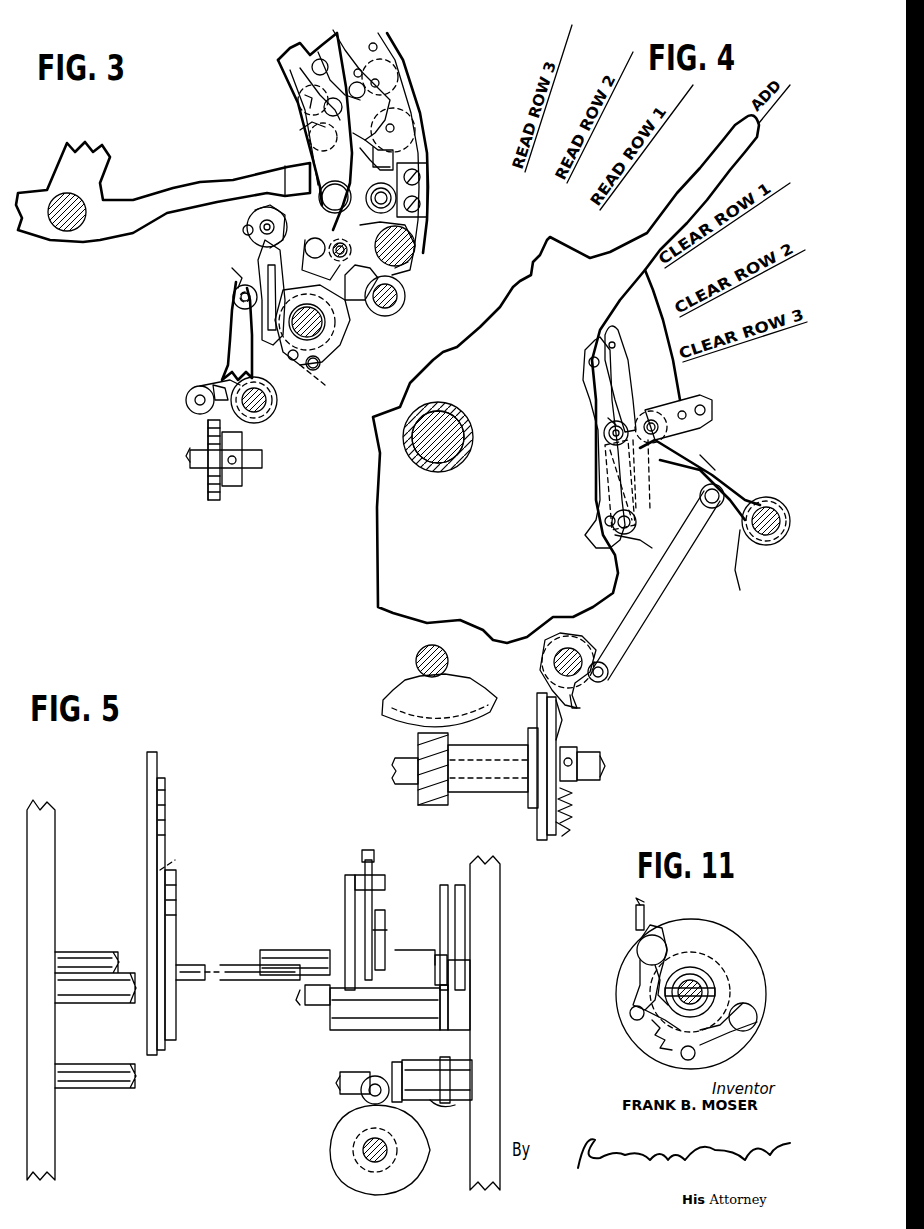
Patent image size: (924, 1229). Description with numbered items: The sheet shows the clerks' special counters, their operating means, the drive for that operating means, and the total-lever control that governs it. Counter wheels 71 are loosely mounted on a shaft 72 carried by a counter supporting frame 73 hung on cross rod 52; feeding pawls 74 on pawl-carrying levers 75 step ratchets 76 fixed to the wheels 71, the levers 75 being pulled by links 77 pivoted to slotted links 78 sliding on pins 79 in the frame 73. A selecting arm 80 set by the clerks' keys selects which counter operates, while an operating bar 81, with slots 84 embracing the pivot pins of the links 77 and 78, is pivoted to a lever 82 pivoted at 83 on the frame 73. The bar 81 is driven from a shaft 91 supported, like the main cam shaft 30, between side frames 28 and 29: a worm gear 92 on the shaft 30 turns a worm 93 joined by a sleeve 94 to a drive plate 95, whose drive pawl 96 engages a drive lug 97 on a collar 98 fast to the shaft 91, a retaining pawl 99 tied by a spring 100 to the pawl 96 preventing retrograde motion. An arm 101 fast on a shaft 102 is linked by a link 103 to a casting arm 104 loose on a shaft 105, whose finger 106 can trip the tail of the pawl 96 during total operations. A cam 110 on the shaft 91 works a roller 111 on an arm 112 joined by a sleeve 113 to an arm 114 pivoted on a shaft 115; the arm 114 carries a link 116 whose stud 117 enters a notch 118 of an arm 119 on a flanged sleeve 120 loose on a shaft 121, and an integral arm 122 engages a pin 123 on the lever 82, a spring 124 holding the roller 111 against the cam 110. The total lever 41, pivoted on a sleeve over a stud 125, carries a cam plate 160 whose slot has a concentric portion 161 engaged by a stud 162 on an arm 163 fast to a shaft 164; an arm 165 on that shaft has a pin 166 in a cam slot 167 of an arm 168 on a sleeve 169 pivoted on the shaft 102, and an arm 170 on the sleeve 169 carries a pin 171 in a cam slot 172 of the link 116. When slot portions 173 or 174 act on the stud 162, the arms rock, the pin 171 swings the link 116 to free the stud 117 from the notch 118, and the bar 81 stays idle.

In FIG. 5, the side frame 28 is at (50, 818).
In FIG. 5, the side frame 29 is at (500, 870).
In FIG. 4, the main cam shaft 30 is at (416, 660).
In FIG. 4, the total lever 41 is at (558, 250).
In FIG. 5, the total lever 41 is at (147, 768).
In FIG. 3, the cross rod 52 is at (410, 258).
In FIG. 3, the counter wheel 71 is at (388, 157).
In FIG. 3, the shaft 72 is at (395, 127).
In FIG. 3, the counter supporting frame 73 is at (420, 228).
In FIG. 3, the feeding pawl 74 is at (347, 190).
In FIG. 3, the pawl-carrying lever 75 is at (340, 40).
In FIG. 3, the ratchet 76 is at (393, 163).
In FIG. 3, the link 77 is at (318, 52).
In FIG. 3, the slotted link 78 is at (305, 82).
In FIG. 3, the pin 79 is at (305, 100).
In FIG. 3, the selecting arm 80 is at (230, 180).
In FIG. 3, the operating bar 81 is at (320, 155).
In FIG. 3, the lever 82 is at (345, 228).
In FIG. 3, the pivot 83 is at (381, 198).
In FIG. 3, the slot 84 is at (300, 68).
In FIG. 3, the shaft 91 is at (262, 460).
In FIG. 4, the shaft 91 is at (602, 770).
In FIG. 5, the shaft 91 is at (388, 1150).
In FIG. 11, the shaft 91 is at (700, 992).
In FIG. 4, the worm gear 92 is at (395, 700).
In FIG. 4, the worm 93 is at (420, 793).
In FIG. 4, the sleeve 94 is at (500, 792).
In FIG. 4, the drive plate 95 is at (543, 820).
In FIG. 11, the drive plate 95 is at (630, 958).
In FIG. 4, the drive pawl 96 is at (560, 720).
In FIG. 11, the drive pawl 96 is at (645, 975).
In FIG. 4, the drive lug 97 is at (580, 758).
In FIG. 11, the drive lug 97 is at (648, 1015).
In FIG. 4, the collar 98 is at (574, 795).
In FIG. 11, the collar 98 is at (715, 992).
In FIG. 4, the retaining pawl 99 is at (560, 834).
In FIG. 11, the retaining pawl 99 is at (720, 1035).
In FIG. 11, the spring 100 is at (655, 1030).
In FIG. 4, the arm 101 is at (738, 575).
In FIG. 3, the shaft 102 is at (400, 300).
In FIG. 4, the shaft 102 is at (768, 545).
In FIG. 5, the shaft 102 is at (285, 960).
In FIG. 4, the link 103 is at (672, 592).
In FIG. 4, the casting arm 104 is at (570, 640).
In FIG. 4, the shaft 105 is at (555, 662).
In FIG. 4, the finger 106 is at (580, 705).
In FIG. 11, the finger 106 is at (644, 912).
In FIG. 3, the cam 110 is at (216, 488).
In FIG. 5, the cam 110 is at (418, 1132).
In FIG. 3, the roller 111 is at (210, 388).
In FIG. 5, the roller 111 is at (373, 1076).
In FIG. 3, the arm 112 is at (277, 392).
In FIG. 5, the arm 112 is at (400, 1062).
In FIG. 5, the sleeve 113 is at (455, 1105).
In FIG. 3, the arm 114 is at (190, 405).
In FIG. 5, the arm 114 is at (460, 1075).
In FIG. 3, the shaft 115 is at (266, 405).
In FIG. 5, the shaft 115 is at (340, 1080).
In FIG. 3, the link 116 is at (232, 340).
In FIG. 5, the link 116 is at (460, 1030).
In FIG. 3, the stud 117 is at (238, 298).
In FIG. 5, the stud 117 is at (447, 975).
In FIG. 3, the notch 118 is at (240, 292).
In FIG. 3, the arm 119 is at (318, 358).
In FIG. 5, the arm 119 is at (448, 1003).
In FIG. 3, the flanged sleeve 120 is at (330, 380).
In FIG. 5, the flanged sleeve 120 is at (345, 1020).
In FIG. 3, the shaft 121 is at (322, 322).
In FIG. 5, the shaft 121 is at (305, 995).
In FIG. 3, the arm 122 is at (338, 318).
In FIG. 5, the arm 122 is at (385, 915).
In FIG. 3, the pin 123 is at (407, 253).
In FIG. 3, the spring 124 is at (236, 282).
In FIG. 4, the spring 124 is at (465, 420).
In FIG. 4, the stud 125 is at (455, 430).
In FIG. 4, the cam plate 160 is at (590, 372).
In FIG. 5, the cam plate 160 is at (165, 800).
In FIG. 4, the cam slot portion 161 is at (610, 419).
In FIG. 4, the stud 162 is at (605, 440).
In FIG. 5, the stud 162 is at (175, 860).
In FIG. 4, the arm 163 is at (612, 468).
In FIG. 5, the arm 163 is at (176, 905).
In FIG. 4, the shaft 164 is at (614, 520).
In FIG. 5, the shaft 164 is at (232, 965).
In FIG. 4, the arm 165 is at (650, 548).
In FIG. 5, the arm 165 is at (345, 905).
In FIG. 4, the pin 166 is at (652, 420).
In FIG. 5, the pin 166 is at (378, 878).
In FIG. 4, the cam slot 167 is at (685, 400).
In FIG. 4, the arm 168 is at (715, 438).
In FIG. 5, the arm 168 is at (362, 858).
In FIG. 4, the sleeve 169 is at (724, 488).
In FIG. 5, the sleeve 169 is at (430, 925).
In FIG. 3, the arm 170 is at (270, 222).
In FIG. 4, the arm 170 is at (703, 458).
In FIG. 5, the arm 170 is at (465, 930).
In FIG. 3, the pin 171 is at (247, 228).
In FIG. 5, the pin 171 is at (448, 905).
In FIG. 3, the cam slot 172 is at (268, 253).
In FIG. 4, the cam slot portion 173 is at (608, 332).
In FIG. 4, the cam slot portion 174 is at (645, 500).